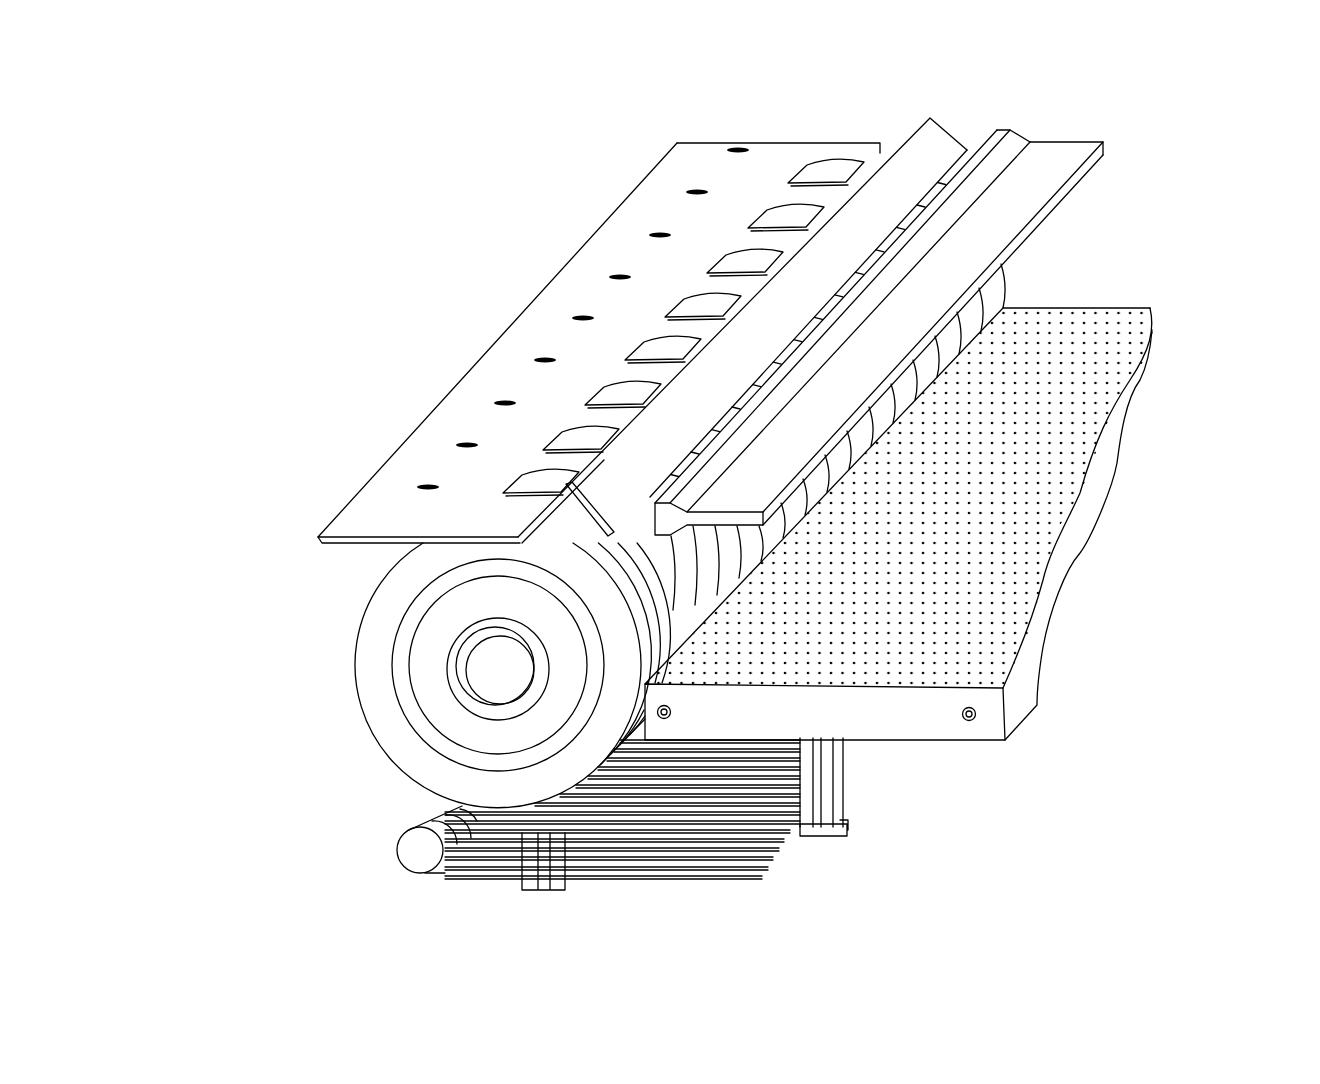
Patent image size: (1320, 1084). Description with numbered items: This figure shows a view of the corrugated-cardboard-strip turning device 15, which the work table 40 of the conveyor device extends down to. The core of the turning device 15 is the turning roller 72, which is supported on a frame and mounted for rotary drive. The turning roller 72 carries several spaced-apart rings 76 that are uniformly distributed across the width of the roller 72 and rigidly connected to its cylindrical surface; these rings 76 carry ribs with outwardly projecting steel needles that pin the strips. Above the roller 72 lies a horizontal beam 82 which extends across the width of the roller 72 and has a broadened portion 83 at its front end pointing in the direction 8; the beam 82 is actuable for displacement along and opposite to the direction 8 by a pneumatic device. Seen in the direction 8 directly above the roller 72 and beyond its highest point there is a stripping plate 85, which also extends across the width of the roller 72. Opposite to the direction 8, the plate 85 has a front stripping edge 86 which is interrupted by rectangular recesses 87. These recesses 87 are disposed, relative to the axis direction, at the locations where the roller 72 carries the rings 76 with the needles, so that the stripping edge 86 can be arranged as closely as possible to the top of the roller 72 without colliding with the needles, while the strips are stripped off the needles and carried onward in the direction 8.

The corrugated-cardboard-strip turning device 15 is at (776, 113).
The turning roller 72 is at (423, 662).
The rings 76 is at (630, 378).
The horizontal beam 82 is at (1038, 197).
The broadened portion 83 is at (650, 517).
The stripping plate 85 is at (347, 520).
The front stripping edge 86 is at (533, 510).
The rectangular recesses 87 is at (562, 430).
The work table 40 is at (1092, 468).
The direction 8 is at (947, 795).